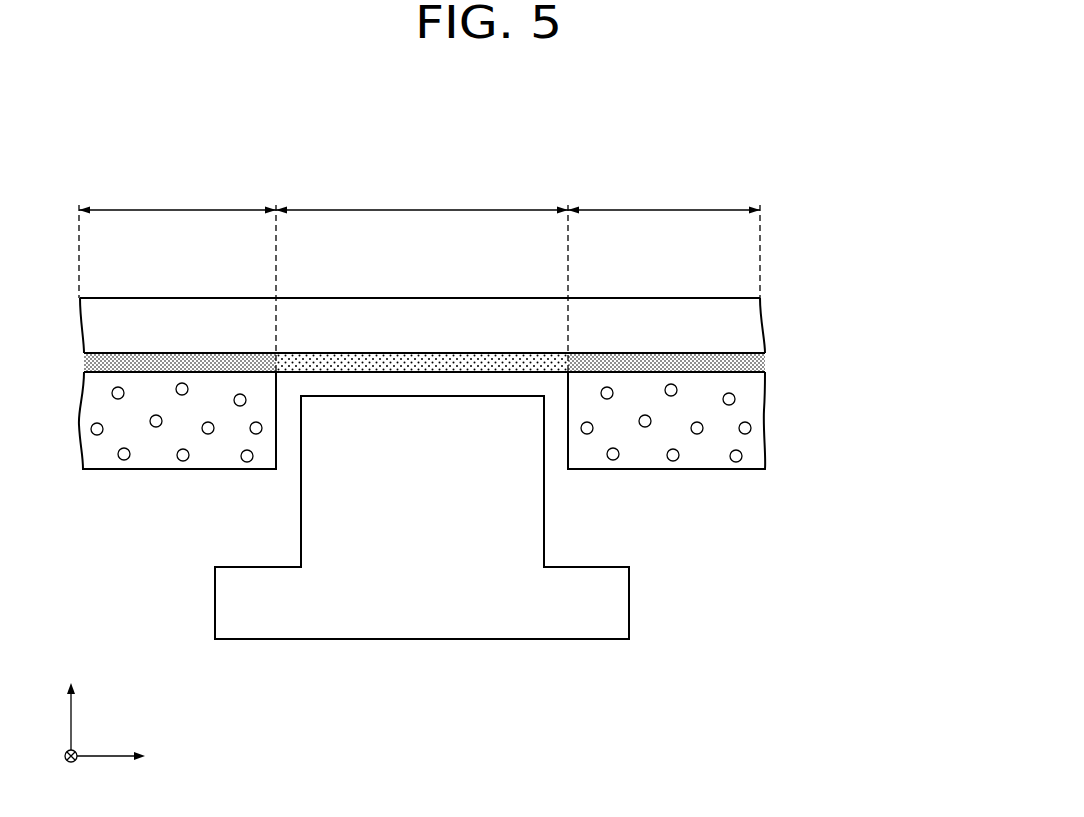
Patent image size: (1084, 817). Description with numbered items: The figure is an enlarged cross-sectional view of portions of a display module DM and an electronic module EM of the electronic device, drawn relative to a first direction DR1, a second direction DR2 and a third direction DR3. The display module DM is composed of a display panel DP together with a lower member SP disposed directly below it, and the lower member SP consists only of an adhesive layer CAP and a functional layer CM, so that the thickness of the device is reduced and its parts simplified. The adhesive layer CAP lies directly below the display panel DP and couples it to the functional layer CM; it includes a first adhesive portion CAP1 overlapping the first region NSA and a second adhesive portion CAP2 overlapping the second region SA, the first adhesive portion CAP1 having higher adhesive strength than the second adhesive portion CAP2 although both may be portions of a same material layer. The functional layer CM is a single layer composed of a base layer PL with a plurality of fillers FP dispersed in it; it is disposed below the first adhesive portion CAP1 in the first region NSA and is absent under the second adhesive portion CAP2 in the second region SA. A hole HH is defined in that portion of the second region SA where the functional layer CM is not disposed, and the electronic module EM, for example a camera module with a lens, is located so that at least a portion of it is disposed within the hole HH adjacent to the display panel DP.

The display module DM is at (740, 160).
The first region NSA is at (419, 239).
The second region SA is at (422, 276).
The display panel DP is at (752, 325).
The lower member SP is at (900, 350).
The adhesive layer CAP is at (752, 360).
The first adhesive portion CAP1 is at (665, 360).
The second adhesive portion CAP2 is at (419, 360).
The functional layer CM is at (840, 388).
The filler FP is at (735, 399).
The base layer PL is at (750, 450).
The electronic module EM is at (205, 603).
The hole HH is at (282, 431).
The first direction DR1 is at (131, 757).
The second direction DR2 is at (71, 773).
The third direction DR3 is at (71, 704).